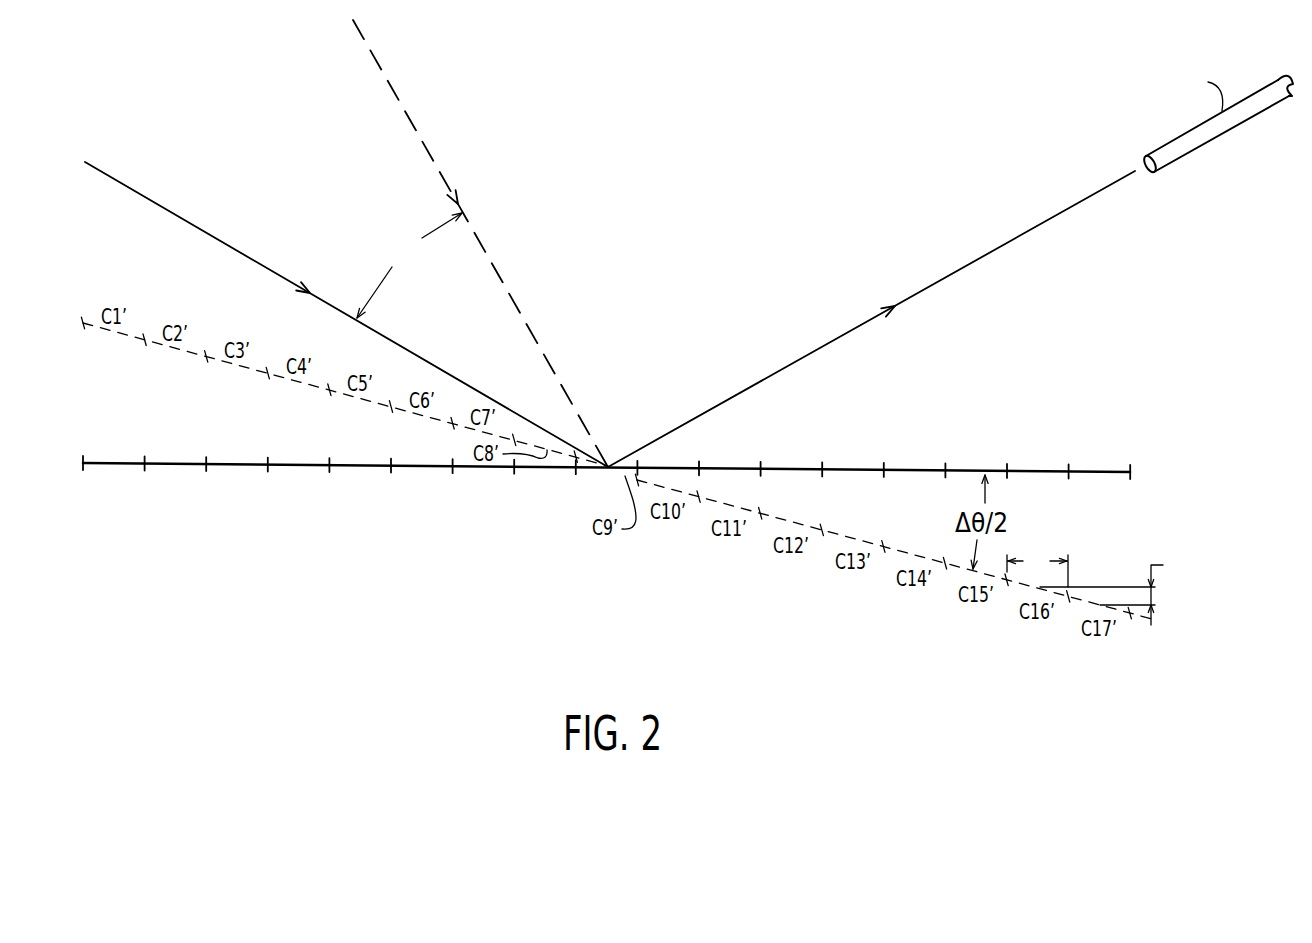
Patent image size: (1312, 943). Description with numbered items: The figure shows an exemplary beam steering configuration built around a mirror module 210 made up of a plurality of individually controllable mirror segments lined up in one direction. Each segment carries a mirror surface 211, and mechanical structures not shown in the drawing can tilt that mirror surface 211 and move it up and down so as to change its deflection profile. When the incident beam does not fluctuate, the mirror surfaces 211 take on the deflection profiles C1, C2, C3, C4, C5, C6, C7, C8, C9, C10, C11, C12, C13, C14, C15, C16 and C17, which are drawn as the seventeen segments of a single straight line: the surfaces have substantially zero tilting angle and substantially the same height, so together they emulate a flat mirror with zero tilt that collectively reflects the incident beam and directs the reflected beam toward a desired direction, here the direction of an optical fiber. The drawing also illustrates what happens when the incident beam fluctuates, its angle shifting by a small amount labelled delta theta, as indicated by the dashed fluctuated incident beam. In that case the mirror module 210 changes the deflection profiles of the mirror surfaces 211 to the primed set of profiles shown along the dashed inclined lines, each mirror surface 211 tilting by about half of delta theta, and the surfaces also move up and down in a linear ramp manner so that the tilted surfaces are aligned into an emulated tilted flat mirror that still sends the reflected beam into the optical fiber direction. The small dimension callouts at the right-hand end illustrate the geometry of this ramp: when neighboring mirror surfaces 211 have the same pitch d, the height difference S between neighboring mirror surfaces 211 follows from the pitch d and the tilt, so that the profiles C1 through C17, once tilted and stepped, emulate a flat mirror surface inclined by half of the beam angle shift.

The mirror module 210 is at (1021, 49).
The mirror surface 211 is at (643, 475).
The pitch d is at (1037, 567).
The height difference S is at (1112, 587).
The deflection profile C1 is at (114, 489).
The deflection profile C2 is at (175, 490).
The deflection profile C3 is at (237, 490).
The deflection profile C4 is at (299, 491).
The deflection profile C5 is at (360, 491).
The deflection profile C6 is at (422, 492).
The deflection profile C7 is at (483, 492).
The deflection profile C8 is at (545, 493).
The deflection profile C9 is at (607, 494).
The deflection profile C10 is at (668, 456).
The deflection profile C11 is at (730, 457).
The deflection profile C12 is at (791, 457).
The deflection profile C13 is at (853, 458).
The deflection profile C14 is at (915, 458).
The deflection profile C15 is at (976, 459).
The deflection profile C16 is at (1038, 459).
The deflection profile C17 is at (1126, 468).